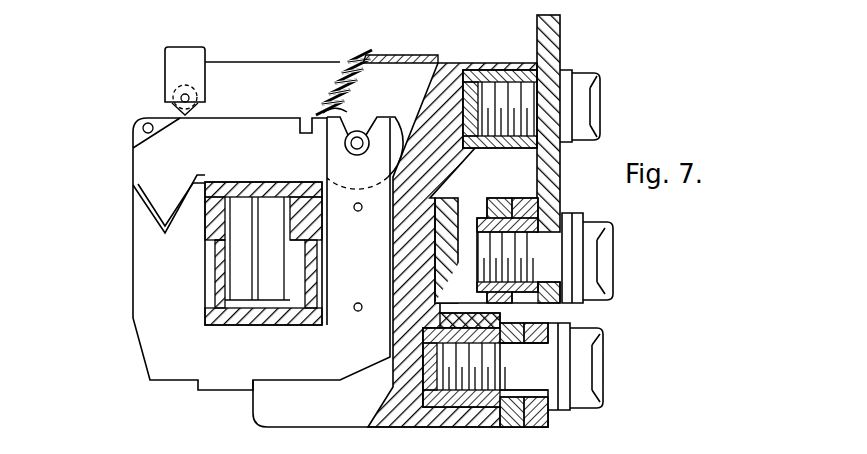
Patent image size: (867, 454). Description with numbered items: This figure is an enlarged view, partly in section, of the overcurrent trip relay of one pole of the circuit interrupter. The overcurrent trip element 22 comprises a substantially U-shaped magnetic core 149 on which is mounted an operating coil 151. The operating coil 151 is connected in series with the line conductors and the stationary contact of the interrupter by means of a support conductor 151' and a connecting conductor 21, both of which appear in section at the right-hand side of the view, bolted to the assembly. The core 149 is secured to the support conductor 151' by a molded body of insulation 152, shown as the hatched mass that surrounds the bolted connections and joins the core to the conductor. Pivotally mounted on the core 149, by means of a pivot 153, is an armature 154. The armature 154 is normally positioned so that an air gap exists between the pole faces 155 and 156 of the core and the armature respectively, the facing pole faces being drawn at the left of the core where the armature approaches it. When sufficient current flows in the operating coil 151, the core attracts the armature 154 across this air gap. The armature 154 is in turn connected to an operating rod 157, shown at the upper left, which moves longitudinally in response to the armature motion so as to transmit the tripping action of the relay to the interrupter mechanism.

The connecting conductor 21 is at (512, 428).
The overcurrent trip element 22 is at (104, 264).
The magnetic core 149 is at (133, 305).
The operating coil 151 is at (524, 239).
The support conductor 151' is at (577, 123).
The molded body of insulation 152 is at (447, 63).
The pivot 153 is at (364, 133).
The armature 154 is at (136, 157).
The pole face of the core 155 is at (133, 181).
The pole face of the armature 156 is at (148, 211).
The operating rod 157 is at (165, 71).